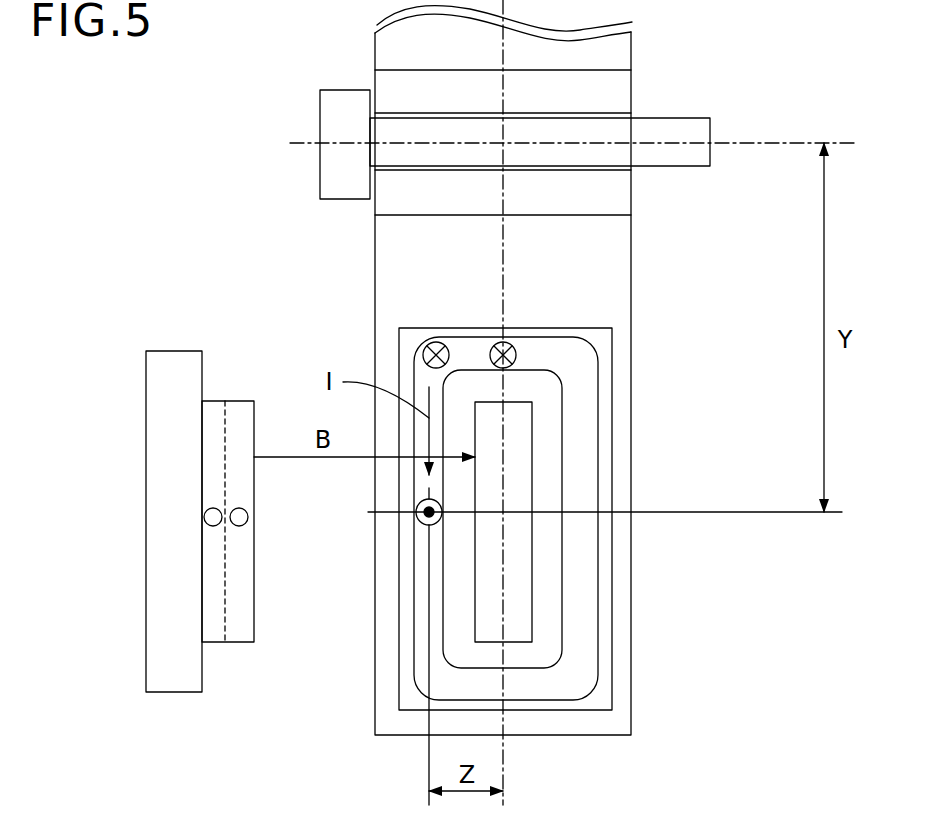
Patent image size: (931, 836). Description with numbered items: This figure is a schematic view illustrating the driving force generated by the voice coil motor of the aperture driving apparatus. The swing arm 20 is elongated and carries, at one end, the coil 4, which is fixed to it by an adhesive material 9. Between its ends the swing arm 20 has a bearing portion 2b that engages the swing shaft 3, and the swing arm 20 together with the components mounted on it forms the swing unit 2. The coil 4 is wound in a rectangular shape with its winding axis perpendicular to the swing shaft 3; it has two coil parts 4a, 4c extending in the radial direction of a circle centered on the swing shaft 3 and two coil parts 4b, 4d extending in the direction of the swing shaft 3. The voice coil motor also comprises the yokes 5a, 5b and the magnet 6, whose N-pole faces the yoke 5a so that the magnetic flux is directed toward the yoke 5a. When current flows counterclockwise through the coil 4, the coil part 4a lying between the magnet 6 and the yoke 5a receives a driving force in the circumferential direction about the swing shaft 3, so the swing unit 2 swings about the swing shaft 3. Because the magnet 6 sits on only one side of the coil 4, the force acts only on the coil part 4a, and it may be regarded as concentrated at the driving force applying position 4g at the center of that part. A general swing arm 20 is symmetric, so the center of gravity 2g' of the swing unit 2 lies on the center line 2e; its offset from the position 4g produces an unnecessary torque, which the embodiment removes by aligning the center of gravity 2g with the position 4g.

The swing unit 2 is at (730, 93).
The bearing portion 2b is at (403, 193).
The center line 2e is at (503, 243).
The center of gravity 2g is at (378, 341).
The center of gravity 2g' is at (602, 356).
The swing shaft 3 is at (670, 167).
The coil 4 is at (580, 532).
The coil part 4a is at (422, 620).
The coil part 4b is at (560, 690).
The coil part 4c is at (580, 600).
The coil part 4d is at (467, 357).
The driving force applying position 4g is at (418, 522).
The yoke 5a is at (523, 618).
The yoke 5b is at (174, 692).
The magnet 6 is at (224, 642).
The adhesive material 9 is at (602, 692).
The swing arm 20 is at (631, 290).